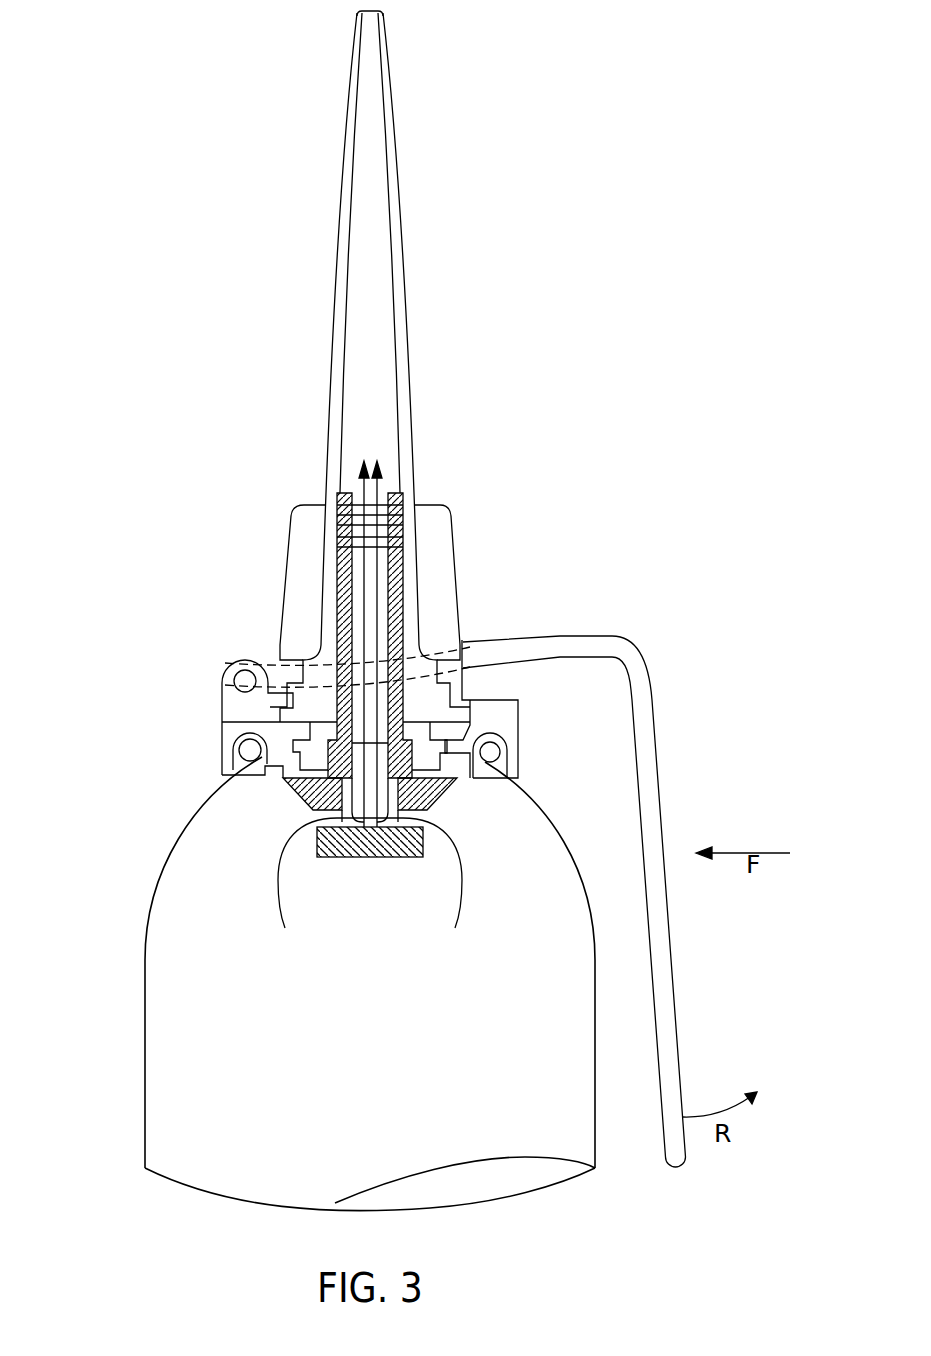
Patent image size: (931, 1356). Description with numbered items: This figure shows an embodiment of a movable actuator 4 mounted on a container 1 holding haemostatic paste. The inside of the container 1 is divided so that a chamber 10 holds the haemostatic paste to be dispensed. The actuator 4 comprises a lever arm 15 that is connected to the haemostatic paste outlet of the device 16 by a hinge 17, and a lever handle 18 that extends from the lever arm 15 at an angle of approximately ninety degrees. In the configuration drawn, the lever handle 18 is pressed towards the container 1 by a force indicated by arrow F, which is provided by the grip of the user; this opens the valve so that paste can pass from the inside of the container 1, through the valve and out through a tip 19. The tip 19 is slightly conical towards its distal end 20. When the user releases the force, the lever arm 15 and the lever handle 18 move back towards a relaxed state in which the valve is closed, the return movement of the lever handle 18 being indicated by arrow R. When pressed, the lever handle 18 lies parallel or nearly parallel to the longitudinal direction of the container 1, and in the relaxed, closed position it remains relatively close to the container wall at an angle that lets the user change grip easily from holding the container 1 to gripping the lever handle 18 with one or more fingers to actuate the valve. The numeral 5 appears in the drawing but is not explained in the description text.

The container 1 is at (145, 1025).
The movable actuator 4 is at (607, 869).
The dispensing head 5 is at (299, 659).
The chamber 10 is at (381, 1025).
The lever arm 15 is at (568, 635).
The haemostatic paste outlet 16 is at (293, 512).
The hinge 17 is at (226, 672).
The lever handle 18 is at (678, 1022).
The tip 19 is at (366, 355).
The distal end 20 is at (385, 22).